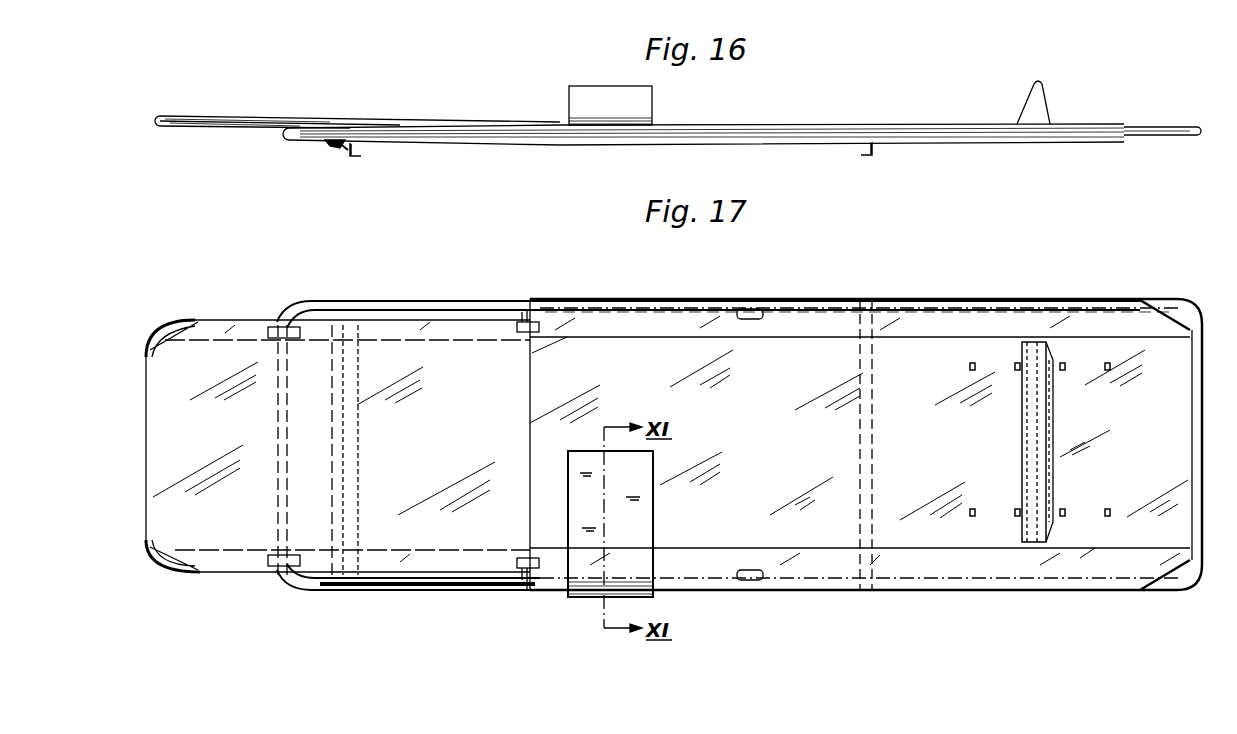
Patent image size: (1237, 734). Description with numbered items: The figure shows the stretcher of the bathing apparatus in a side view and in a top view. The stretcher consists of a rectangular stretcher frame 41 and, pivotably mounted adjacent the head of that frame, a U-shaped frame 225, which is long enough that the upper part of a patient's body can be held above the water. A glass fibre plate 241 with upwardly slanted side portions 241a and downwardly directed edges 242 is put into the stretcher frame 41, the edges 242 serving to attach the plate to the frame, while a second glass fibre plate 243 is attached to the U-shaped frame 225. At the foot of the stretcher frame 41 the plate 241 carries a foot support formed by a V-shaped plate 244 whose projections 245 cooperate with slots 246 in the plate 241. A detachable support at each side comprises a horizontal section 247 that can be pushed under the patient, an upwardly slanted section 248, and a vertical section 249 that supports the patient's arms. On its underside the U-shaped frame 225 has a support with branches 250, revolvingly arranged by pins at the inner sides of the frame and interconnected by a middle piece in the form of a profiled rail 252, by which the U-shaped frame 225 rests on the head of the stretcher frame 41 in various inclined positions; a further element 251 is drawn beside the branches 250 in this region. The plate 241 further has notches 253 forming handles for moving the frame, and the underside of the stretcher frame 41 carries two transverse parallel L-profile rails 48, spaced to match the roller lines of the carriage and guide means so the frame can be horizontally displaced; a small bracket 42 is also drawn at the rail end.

In FIG. 16, the stretcher frame 41 is at (505, 133).
In FIG. 17, the stretcher frame 41 is at (470, 300).
In FIG. 17, the bracket 42 is at (539, 305).
In FIG. 16, the transverse parallel rails 48 is at (358, 158).
In FIG. 17, the transverse parallel rails 48 is at (395, 270).
In FIG. 16, the U-shaped frame 225 is at (193, 115).
In FIG. 17, the U-shaped frame 225 is at (172, 320).
In FIG. 17, the glass fibre plate 241 is at (866, 467).
In FIG. 17, the upwardly slanted side portions 241a is at (646, 335).
In FIG. 16, the downwardly directed edges 242 is at (715, 136).
In FIG. 17, the second glass fibre plate 243 is at (447, 520).
In FIG. 16, the V-shaped plate 244 is at (1039, 86).
In FIG. 17, the V-shaped plate 244 is at (1038, 356).
In FIG. 17, the projections 245 is at (1024, 340).
In FIG. 17, the slots 246 is at (972, 520).
In FIG. 17, the horizontal section 247 is at (581, 500).
In FIG. 17, the upwardly slanted section 248 is at (640, 566).
In FIG. 16, the vertical section 249 is at (601, 104).
In FIG. 16, the branches 250 is at (333, 146).
In FIG. 17, the branches 250 is at (334, 330).
In FIG. 17, the latch rod 251 is at (273, 322).
In FIG. 16, the profiled rail 252 is at (340, 152).
In FIG. 17, the profiled rail 252 is at (358, 320).
In FIG. 17, the notches 253 is at (762, 312).